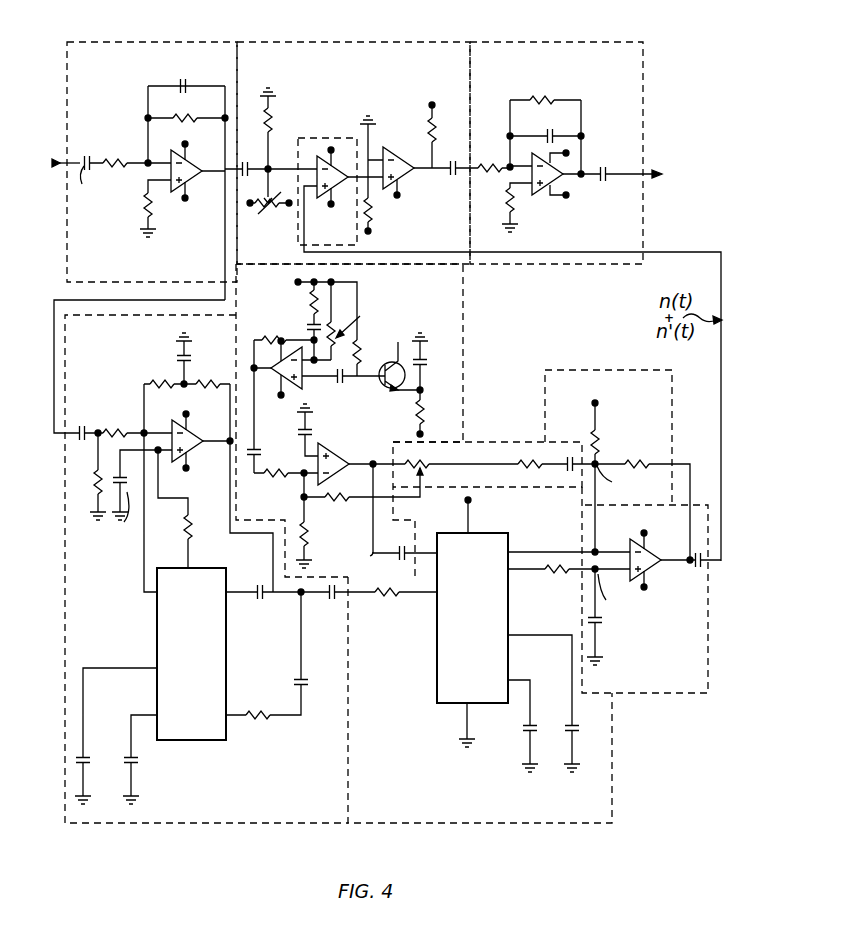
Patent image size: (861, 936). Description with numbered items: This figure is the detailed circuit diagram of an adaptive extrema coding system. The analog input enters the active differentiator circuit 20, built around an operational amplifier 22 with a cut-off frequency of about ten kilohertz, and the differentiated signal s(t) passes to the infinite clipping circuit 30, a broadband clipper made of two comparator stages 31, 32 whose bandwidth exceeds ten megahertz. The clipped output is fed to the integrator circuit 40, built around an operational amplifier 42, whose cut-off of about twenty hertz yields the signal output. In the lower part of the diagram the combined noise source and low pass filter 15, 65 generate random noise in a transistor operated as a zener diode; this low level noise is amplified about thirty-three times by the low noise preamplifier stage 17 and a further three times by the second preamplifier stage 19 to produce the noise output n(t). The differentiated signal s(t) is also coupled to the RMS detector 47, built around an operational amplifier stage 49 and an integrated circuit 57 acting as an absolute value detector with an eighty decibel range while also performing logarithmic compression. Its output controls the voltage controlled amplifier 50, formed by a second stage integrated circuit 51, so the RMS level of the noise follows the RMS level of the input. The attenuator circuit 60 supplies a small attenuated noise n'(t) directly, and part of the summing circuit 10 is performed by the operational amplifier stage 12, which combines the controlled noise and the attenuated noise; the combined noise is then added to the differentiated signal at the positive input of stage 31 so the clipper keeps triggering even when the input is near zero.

The active differentiator circuit 20 is at (209, 40).
The operational amplifier 22 is at (174, 194).
The infinite clipping circuit 30 is at (335, 40).
The first clipper stage 31 is at (324, 198).
The second clipper stage 32 is at (399, 166).
The summing circuit 10 is at (704, 503).
The integrator circuit 40 is at (532, 40).
The operational amplifier 42 is at (548, 196).
The noise source 15 is at (378, 420).
The low pass filter 65 is at (464, 381).
The low noise preamplifier stage 17 is at (294, 378).
The second preamplifier stage 19 is at (339, 471).
The attenuator circuit 60 is at (501, 490).
The voltage controlled amplifier circuit 50 is at (552, 825).
The operational amplifier stage 12 is at (655, 568).
The RMS detector 47 is at (123, 824).
The operational amplifier stage 49 is at (200, 440).
The integrated circuit 57 is at (224, 741).
The second stage integrated circuit 51 is at (437, 702).